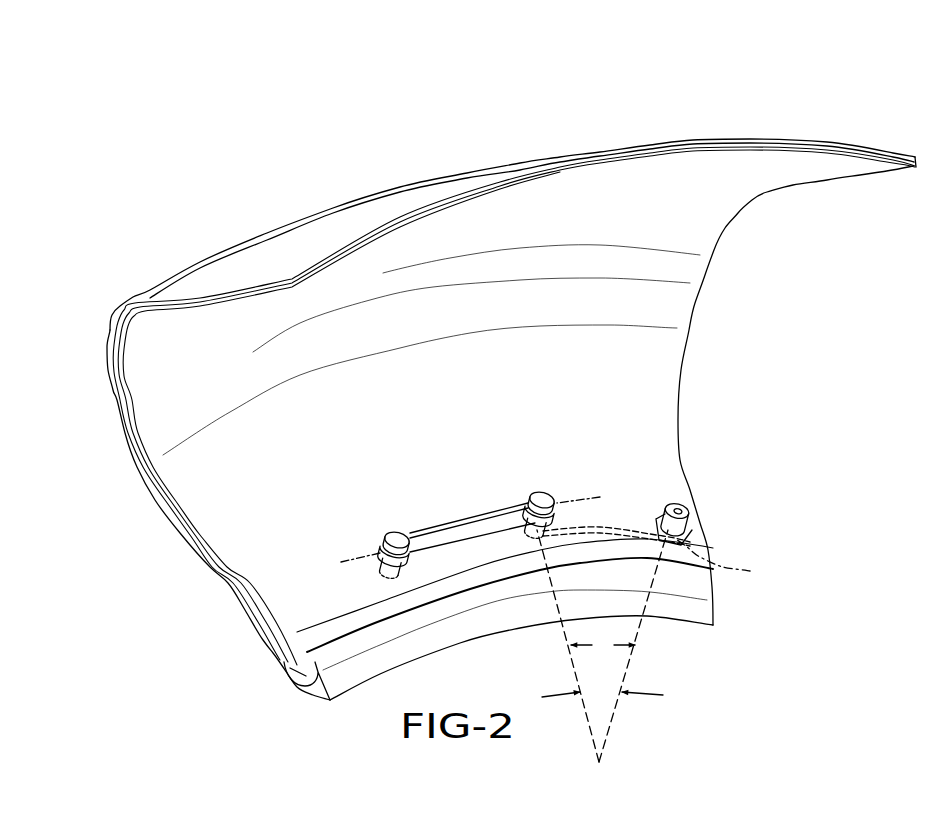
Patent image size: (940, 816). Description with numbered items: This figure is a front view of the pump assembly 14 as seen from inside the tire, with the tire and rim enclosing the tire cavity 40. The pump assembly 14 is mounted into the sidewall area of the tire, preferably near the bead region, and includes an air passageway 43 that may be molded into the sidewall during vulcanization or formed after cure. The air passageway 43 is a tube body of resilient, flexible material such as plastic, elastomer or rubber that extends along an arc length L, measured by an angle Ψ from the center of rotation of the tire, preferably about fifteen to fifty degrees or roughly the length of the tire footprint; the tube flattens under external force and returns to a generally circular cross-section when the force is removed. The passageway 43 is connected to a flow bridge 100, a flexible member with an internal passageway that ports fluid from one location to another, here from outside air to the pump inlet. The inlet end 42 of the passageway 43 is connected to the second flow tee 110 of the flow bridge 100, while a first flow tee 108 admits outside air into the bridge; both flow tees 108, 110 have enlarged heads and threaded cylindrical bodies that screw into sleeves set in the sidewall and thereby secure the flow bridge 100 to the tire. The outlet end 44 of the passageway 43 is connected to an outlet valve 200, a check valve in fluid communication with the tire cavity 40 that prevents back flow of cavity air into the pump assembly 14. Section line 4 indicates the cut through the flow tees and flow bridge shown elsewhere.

The tire cavity 40 is at (652, 348).
The pump assembly 14 is at (623, 523).
The flow bridge 100 is at (450, 478).
The first flow tee 108 is at (390, 515).
The second flow tee 110 is at (537, 482).
The section line 4- 4 is at (341, 562).
The outlet valve 200 is at (688, 512).
The outlet end 44 is at (725, 561).
The inlet end 42 is at (533, 532).
The air passageway 43 is at (607, 533).